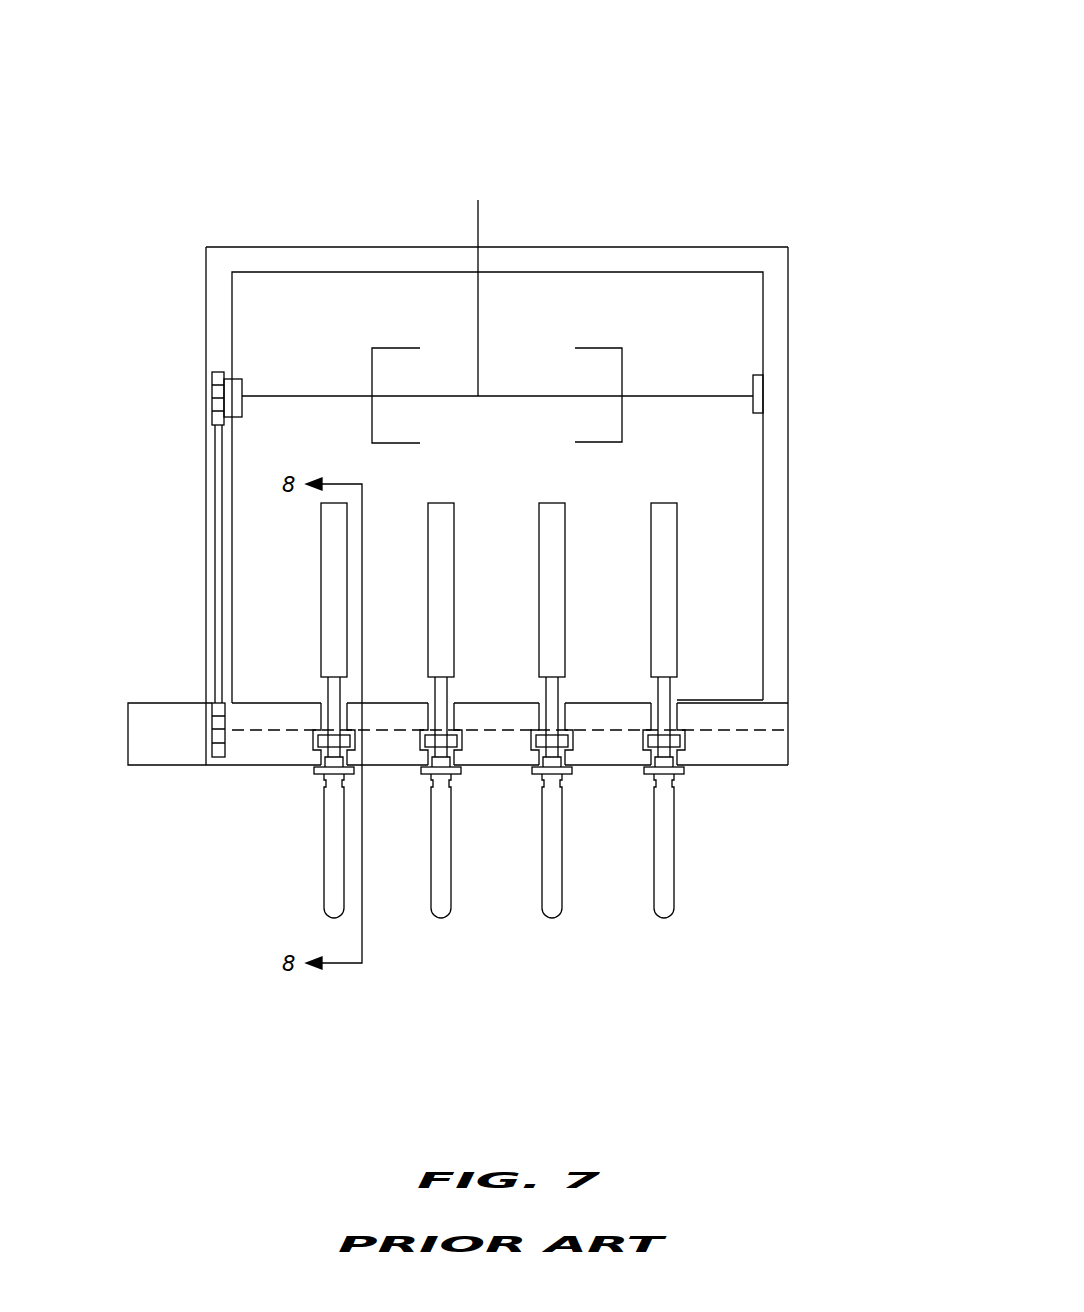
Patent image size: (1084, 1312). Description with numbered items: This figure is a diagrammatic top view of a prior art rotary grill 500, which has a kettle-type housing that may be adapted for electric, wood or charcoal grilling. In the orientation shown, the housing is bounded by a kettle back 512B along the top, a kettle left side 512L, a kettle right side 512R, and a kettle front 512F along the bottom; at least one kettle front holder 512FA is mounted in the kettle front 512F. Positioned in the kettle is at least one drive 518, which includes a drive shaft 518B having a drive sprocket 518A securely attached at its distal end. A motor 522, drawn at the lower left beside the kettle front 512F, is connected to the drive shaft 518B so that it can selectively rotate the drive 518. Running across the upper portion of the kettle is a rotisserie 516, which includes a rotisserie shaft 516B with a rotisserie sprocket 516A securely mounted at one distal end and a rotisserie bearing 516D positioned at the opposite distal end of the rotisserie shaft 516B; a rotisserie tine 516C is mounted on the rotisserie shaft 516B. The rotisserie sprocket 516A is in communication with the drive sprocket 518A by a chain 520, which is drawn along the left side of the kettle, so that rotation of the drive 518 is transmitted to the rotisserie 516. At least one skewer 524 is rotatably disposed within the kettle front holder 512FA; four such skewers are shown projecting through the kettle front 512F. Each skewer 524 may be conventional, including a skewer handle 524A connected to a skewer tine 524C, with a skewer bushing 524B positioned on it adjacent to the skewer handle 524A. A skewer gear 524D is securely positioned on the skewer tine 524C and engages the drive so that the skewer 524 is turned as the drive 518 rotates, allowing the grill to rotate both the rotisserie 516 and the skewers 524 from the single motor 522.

The rotary grill 500 is at (822, 78).
The kettle left side 512L is at (205, 272).
The kettle back 512B is at (246, 247).
The kettle right side 512R is at (788, 497).
The kettle front 512F is at (267, 767).
The kettle front holder 512FA is at (668, 687).
The rotisserie 516 is at (318, 388).
The rotisserie sprocket 516A is at (212, 385).
The rotisserie shaft 516B is at (500, 180).
The rotisserie tine 516C is at (405, 348).
The rotisserie bearing 516D is at (753, 375).
The drive 518 is at (383, 734).
The drive sprocket 518A is at (212, 716).
The drive shaft 518B is at (478, 730).
The chain 520 is at (215, 568).
The motor 522 is at (148, 767).
The skewer 524 is at (777, 761).
The skewer handle 524A is at (675, 893).
The skewer bushing 524B is at (684, 773).
The skewer tine 524C is at (677, 640).
The skewer gear 524D is at (685, 737).